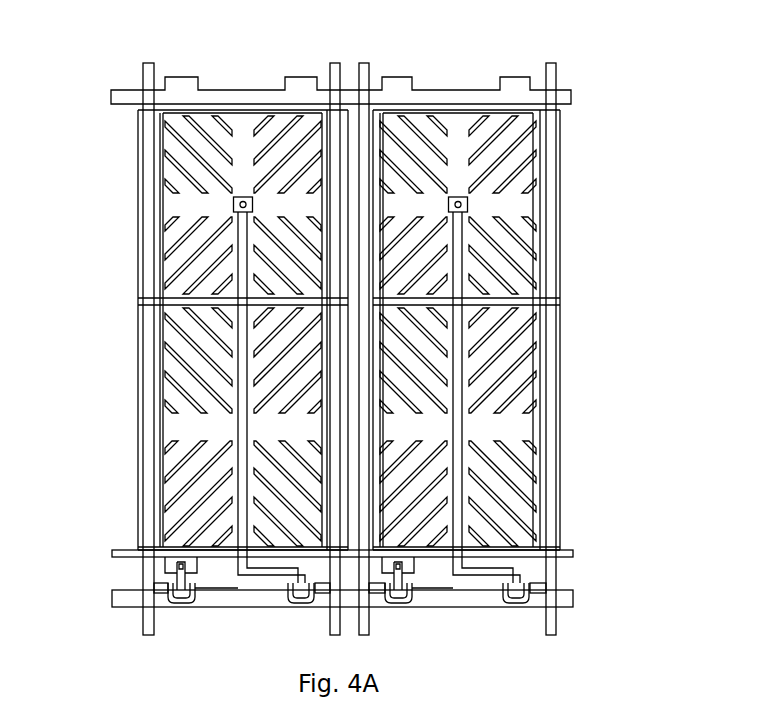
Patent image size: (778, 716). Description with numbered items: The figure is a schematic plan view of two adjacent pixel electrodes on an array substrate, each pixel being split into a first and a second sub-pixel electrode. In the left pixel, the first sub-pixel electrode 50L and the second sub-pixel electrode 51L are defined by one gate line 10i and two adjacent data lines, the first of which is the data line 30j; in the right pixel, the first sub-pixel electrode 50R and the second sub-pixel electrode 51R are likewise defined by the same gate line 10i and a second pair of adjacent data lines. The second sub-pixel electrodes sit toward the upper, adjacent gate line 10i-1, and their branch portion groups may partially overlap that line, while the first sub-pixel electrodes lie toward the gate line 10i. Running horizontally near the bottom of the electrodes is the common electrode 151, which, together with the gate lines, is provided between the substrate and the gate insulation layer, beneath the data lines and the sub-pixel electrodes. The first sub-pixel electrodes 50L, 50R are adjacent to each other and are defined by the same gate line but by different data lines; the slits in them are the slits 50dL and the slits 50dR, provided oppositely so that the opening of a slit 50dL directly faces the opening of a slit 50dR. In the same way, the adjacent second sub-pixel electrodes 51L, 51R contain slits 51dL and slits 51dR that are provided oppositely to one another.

The data line 30j is at (150, 63).
The gate line 10i-1 is at (111, 100).
The gate line 10i is at (114, 600).
The common electrode 151 is at (112, 560).
The second sub-pixel electrode 51L is at (138, 220).
The second sub-pixel electrode 51R is at (560, 213).
The first sub-pixel electrode 50L is at (138, 430).
The first sub-pixel electrode 50R is at (560, 430).
The slits 51dL is at (300, 174).
The slits 51dR is at (390, 167).
The slits 50dL is at (300, 385).
The slits 50dR is at (390, 382).